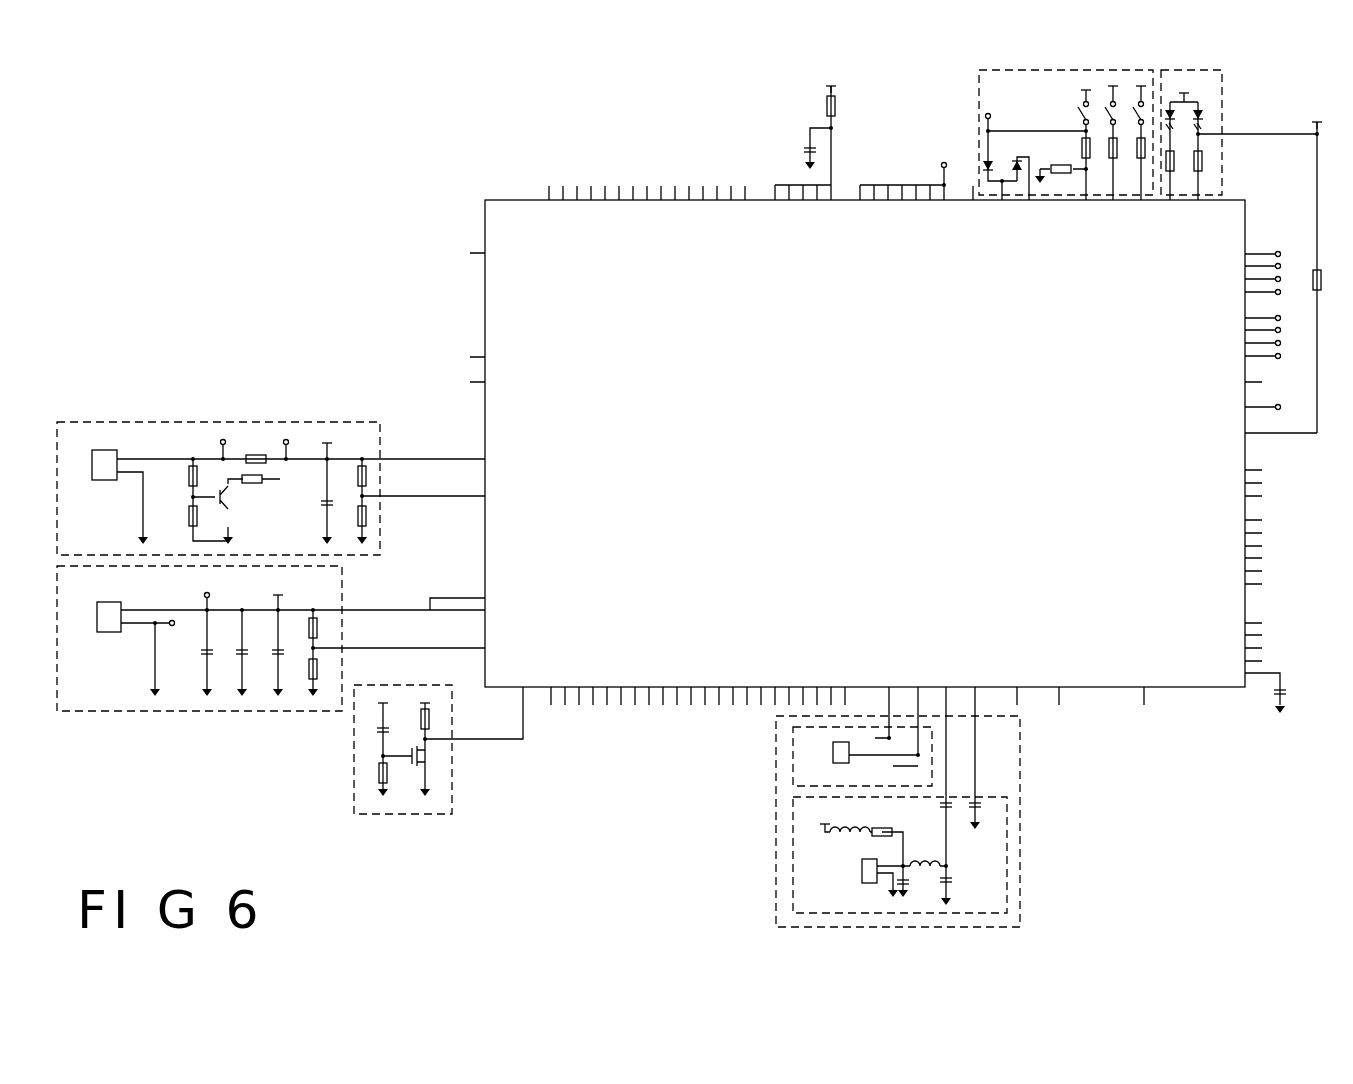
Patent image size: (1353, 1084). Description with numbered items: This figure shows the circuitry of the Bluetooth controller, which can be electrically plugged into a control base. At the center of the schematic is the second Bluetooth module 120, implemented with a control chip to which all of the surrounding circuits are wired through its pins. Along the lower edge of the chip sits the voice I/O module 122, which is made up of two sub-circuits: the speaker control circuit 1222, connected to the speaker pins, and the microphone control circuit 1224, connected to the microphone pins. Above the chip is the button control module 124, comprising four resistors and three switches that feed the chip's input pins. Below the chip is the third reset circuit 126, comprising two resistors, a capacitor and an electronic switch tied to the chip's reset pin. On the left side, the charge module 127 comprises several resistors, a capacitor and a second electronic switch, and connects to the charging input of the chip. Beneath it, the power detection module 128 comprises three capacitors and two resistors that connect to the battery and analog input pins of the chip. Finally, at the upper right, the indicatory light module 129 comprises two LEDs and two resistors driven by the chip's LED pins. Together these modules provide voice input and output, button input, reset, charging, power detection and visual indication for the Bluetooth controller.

The second Bluetooth module 120 is at (484, 290).
The voice I/O module 122 is at (1020, 766).
The speaker control circuit 1222 is at (793, 755).
The microphone control circuit 1224 is at (1007, 858).
The button control module 124 is at (979, 95).
The third reset circuit 126 is at (452, 796).
The charge module 127 is at (160, 421).
The power detection module 128 is at (145, 712).
The indicatory light module 129 is at (1222, 90).